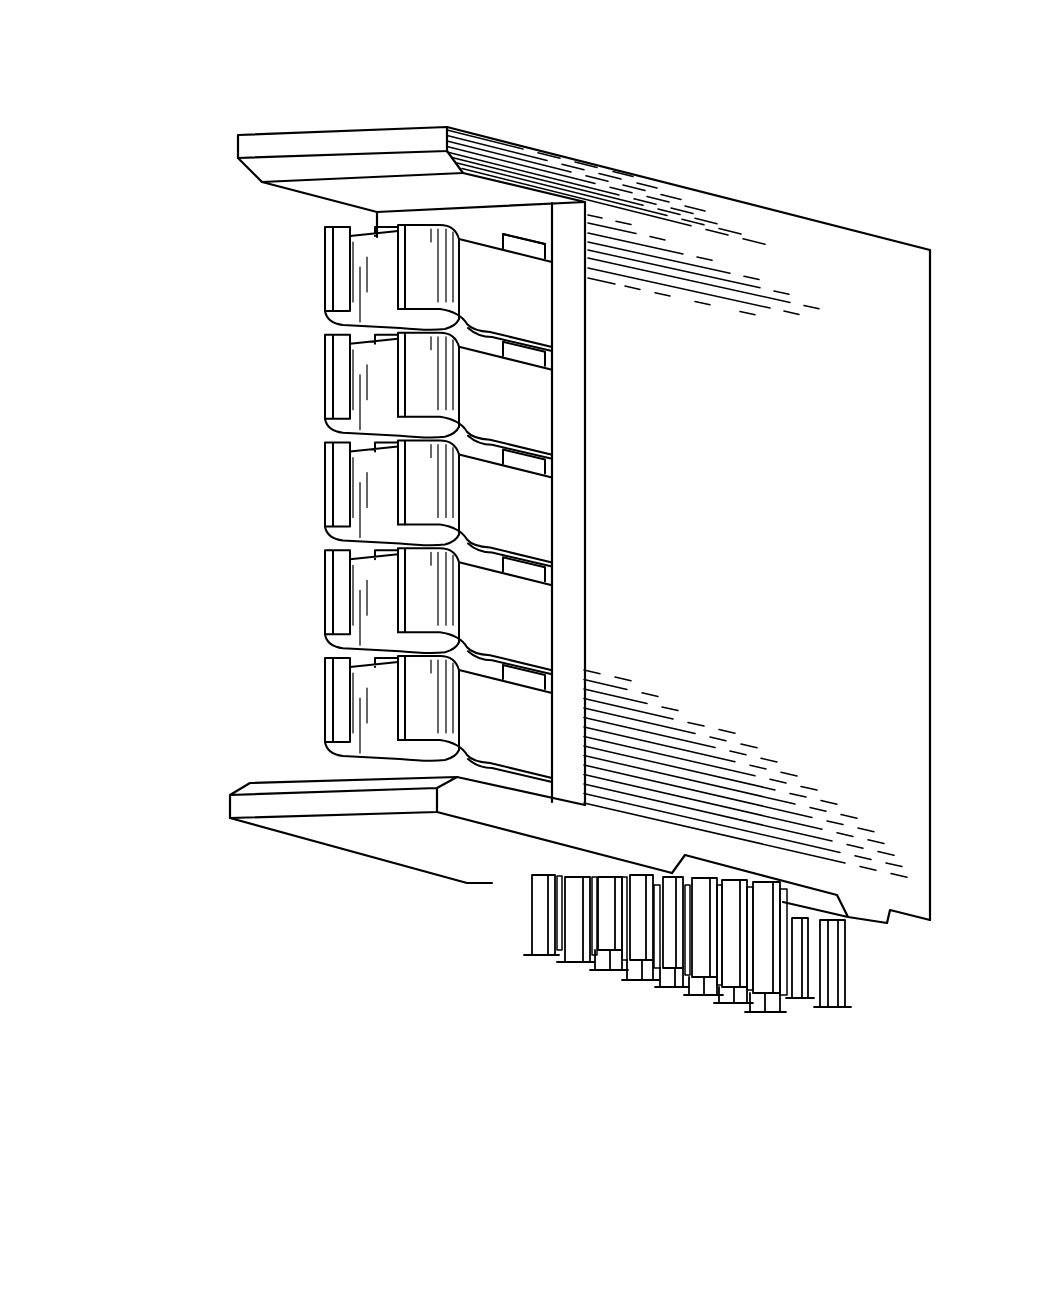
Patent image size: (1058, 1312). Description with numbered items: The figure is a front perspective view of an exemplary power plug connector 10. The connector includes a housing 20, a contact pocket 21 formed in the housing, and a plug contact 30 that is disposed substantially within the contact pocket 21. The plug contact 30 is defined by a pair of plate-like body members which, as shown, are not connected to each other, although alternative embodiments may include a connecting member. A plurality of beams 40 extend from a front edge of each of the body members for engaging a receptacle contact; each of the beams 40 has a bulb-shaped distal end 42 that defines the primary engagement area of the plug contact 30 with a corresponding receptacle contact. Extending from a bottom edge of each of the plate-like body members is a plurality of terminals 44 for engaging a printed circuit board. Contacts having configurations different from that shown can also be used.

The power plug connector 10 is at (203, 441).
The housing 20 is at (690, 190).
The contact pocket 21 is at (537, 238).
The plug contact 30 is at (305, 368).
The beams 40 is at (517, 733).
The bulb-shaped distal end 42 is at (338, 600).
The terminals 44 is at (684, 992).